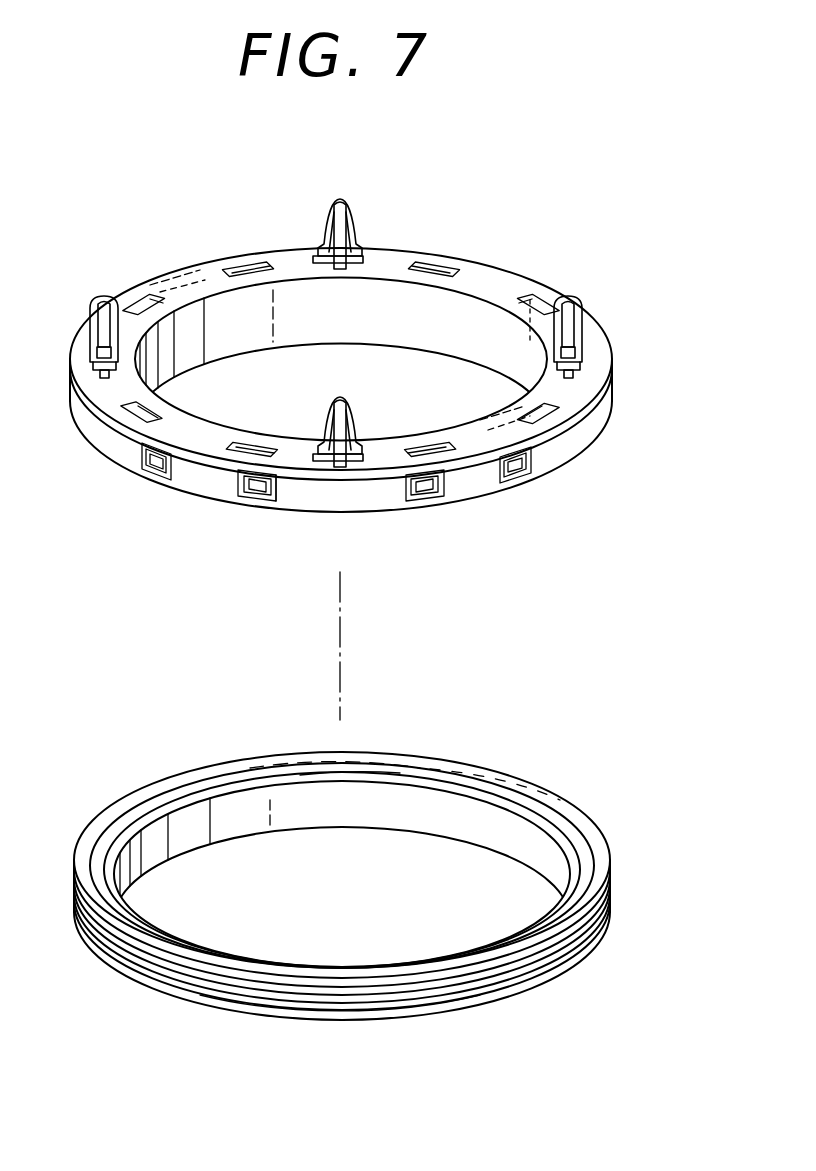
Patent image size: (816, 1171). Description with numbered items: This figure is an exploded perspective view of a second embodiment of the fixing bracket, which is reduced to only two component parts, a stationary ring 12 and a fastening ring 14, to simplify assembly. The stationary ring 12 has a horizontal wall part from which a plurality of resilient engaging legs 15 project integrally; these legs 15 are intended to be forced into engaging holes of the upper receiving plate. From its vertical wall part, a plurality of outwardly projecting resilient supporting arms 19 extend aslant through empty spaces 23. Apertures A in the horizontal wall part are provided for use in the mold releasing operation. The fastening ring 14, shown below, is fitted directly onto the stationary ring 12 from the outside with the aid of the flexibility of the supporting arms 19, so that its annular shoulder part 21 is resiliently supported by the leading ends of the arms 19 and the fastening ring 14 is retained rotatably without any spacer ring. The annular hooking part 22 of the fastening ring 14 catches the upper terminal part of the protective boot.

The stationary ring 12 is at (578, 393).
The fastening ring 14 is at (580, 822).
The resilient engaging legs 15 is at (338, 206).
The resilient supporting arms 19 is at (152, 461).
The annular shoulder part 21 is at (378, 786).
The annular hooking part 22 is at (297, 1005).
The empty spaces 23 is at (282, 482).
The apertures A is at (428, 262).